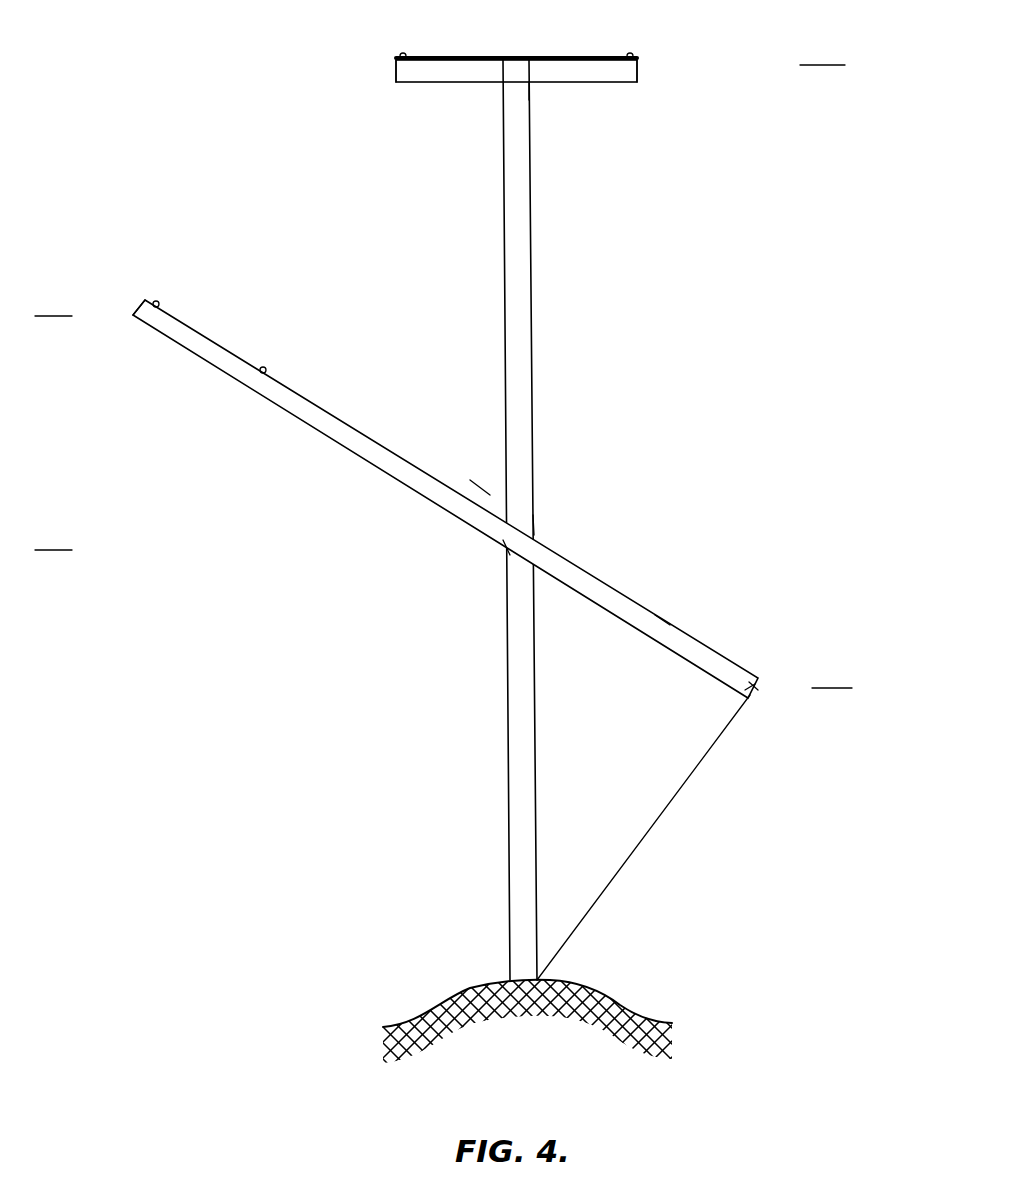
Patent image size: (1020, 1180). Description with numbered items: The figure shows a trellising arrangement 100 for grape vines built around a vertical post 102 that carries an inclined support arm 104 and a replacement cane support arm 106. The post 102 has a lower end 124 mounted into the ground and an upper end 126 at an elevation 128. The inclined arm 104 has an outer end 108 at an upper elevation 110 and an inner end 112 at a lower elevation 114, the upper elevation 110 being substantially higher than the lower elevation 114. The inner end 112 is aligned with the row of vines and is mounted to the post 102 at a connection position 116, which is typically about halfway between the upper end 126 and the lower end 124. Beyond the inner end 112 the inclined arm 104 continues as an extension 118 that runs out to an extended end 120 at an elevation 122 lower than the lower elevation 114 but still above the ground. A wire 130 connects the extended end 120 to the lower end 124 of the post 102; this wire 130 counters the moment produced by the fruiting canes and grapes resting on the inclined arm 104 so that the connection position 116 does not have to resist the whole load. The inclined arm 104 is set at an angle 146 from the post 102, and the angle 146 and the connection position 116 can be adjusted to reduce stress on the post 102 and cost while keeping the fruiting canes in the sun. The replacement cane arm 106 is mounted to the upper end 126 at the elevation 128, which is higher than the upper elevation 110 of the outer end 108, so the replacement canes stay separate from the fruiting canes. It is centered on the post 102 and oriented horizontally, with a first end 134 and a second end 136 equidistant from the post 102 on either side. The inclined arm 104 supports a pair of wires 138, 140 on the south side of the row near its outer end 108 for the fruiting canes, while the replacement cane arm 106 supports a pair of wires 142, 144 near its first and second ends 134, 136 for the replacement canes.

The trellising arrangement 100 is at (802, 284).
The vertical post 102 is at (533, 412).
The inclined support arm 104 is at (320, 407).
The replacement cane support arm 106 is at (535, 58).
The outer end 108 is at (145, 298).
The upper elevation 110 is at (43, 316).
The inner end 112 is at (502, 548).
The lower elevation 114 is at (47, 550).
The connection position 116 is at (534, 530).
The extension 118 is at (672, 618).
The extended end 120 is at (760, 680).
The elevation 122 is at (835, 688).
The lower end 124 is at (508, 978).
The upper end 126 is at (531, 85).
The elevation 128 is at (815, 65).
The wire 130 is at (648, 832).
The first end 134 is at (396, 78).
The second end 136 is at (637, 70).
The wire 138 is at (159, 304).
The wire 140 is at (266, 368).
The wire 142 is at (403, 53).
The wire 144 is at (631, 53).
The angle 146 is at (500, 450).